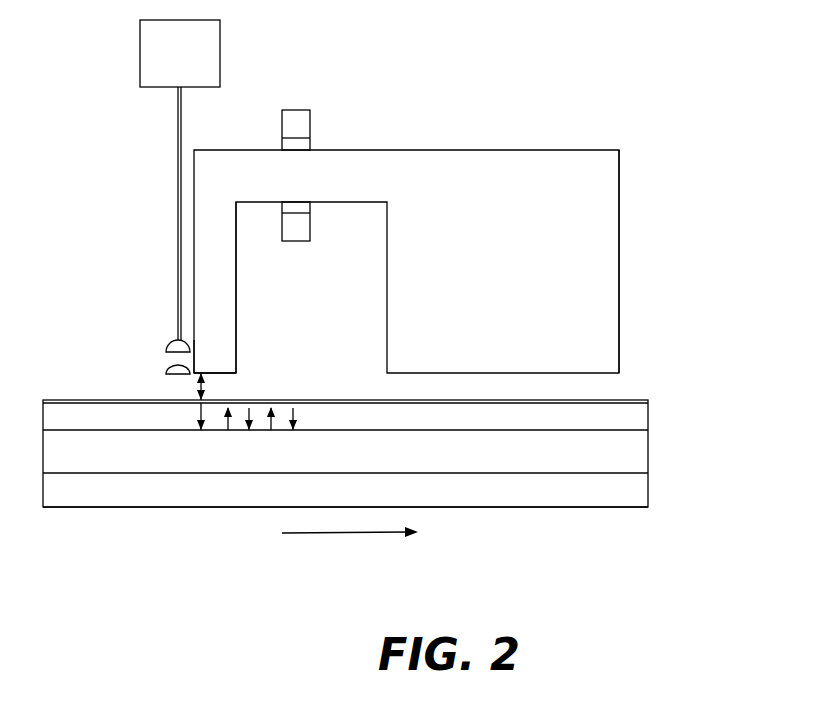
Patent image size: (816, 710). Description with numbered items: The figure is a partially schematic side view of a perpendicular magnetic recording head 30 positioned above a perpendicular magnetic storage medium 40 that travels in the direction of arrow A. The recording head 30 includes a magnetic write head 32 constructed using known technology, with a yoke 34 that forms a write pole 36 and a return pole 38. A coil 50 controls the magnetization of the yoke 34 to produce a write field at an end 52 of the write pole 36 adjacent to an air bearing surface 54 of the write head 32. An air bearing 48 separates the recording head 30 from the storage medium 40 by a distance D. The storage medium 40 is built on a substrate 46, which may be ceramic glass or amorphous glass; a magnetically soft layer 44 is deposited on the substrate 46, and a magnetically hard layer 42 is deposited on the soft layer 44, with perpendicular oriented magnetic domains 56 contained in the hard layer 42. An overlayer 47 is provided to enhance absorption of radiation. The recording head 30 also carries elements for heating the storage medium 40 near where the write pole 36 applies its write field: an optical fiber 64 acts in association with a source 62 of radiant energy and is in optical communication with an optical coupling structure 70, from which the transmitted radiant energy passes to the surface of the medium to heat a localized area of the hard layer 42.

The perpendicular magnetic recording head 30 is at (685, 162).
The magnetic write head 32 is at (478, 112).
The yoke 34 is at (381, 156).
The write pole 36 is at (229, 292).
The return pole 38 is at (620, 285).
The perpendicular magnetic storage medium 40 is at (598, 540).
The magnetically hard layer 42 is at (648, 416).
The magnetically soft layer 44 is at (648, 450).
The substrate 46 is at (648, 485).
The overlayer 47 is at (635, 398).
The air bearing 48 is at (143, 385).
The coil 50 is at (311, 118).
The end of the write pole 52 is at (213, 372).
The air bearing surface 54 is at (231, 376).
The perpendicular oriented magnetic domains 56 is at (228, 424).
The source of radiant energy 62 is at (220, 53).
The optical fiber 64 is at (180, 118).
The optical coupling structure 70 is at (150, 356).
The distance D is at (198, 388).
The direction of travel arrow A is at (312, 534).